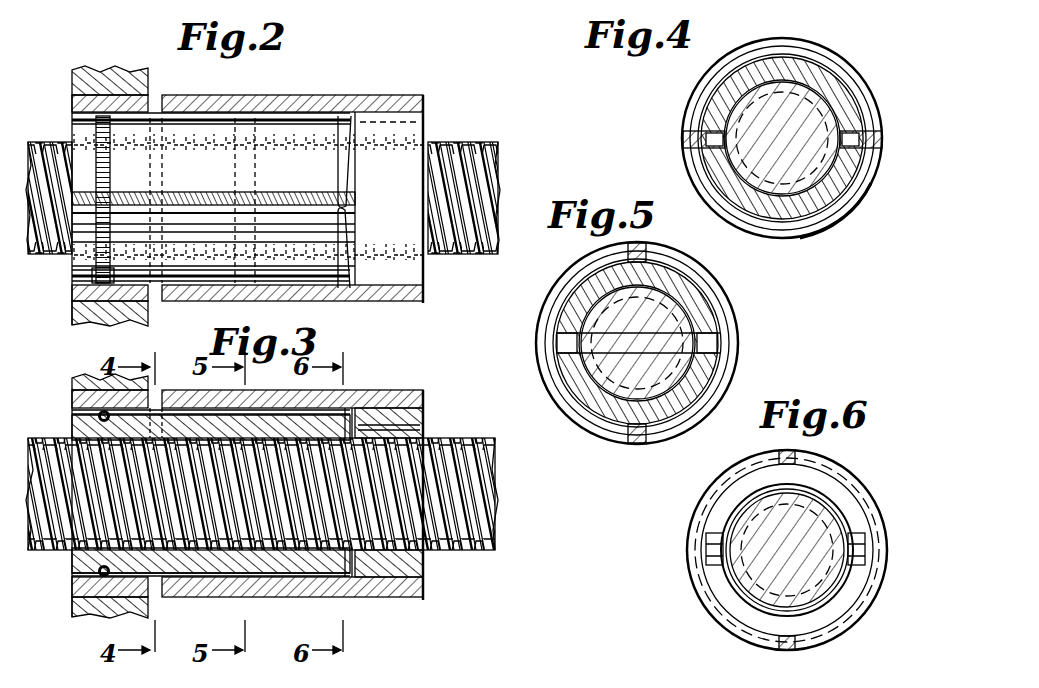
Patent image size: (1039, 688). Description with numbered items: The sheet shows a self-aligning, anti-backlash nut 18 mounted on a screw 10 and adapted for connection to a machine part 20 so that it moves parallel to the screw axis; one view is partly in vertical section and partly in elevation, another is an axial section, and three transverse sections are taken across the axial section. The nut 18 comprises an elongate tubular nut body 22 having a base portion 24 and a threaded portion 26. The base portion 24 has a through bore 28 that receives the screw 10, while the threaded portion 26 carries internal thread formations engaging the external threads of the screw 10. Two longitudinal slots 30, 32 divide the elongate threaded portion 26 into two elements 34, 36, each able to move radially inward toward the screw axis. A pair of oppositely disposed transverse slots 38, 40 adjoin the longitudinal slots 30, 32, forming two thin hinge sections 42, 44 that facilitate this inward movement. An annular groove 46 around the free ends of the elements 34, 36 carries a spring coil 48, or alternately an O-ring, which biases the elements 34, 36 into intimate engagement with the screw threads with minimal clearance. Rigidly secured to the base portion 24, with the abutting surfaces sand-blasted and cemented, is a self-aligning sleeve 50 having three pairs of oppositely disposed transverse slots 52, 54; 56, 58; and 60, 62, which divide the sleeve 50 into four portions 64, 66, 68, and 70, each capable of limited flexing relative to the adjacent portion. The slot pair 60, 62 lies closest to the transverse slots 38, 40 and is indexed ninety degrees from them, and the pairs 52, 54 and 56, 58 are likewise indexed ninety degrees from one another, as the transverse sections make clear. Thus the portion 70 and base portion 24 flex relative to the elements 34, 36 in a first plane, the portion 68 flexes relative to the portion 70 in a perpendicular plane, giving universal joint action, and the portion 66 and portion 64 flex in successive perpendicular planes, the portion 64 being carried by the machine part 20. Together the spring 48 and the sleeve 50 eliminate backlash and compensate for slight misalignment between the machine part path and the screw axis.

In FIG. 2, the screw 10 is at (470, 142).
In FIG. 3, the screw 10 is at (468, 444).
In FIG. 4, the screw 10 is at (800, 112).
In FIG. 5, the screw 10 is at (688, 372).
In FIG. 6, the screw 10 is at (812, 590).
In FIG. 2, the self-aligning, anti-backlash nut 18 is at (434, 323).
In FIG. 3, the self-aligning, anti-backlash nut 18 is at (440, 570).
In FIG. 2, the machine part 20 is at (93, 72).
In FIG. 3, the machine part 20 is at (82, 380).
In FIG. 2, the nut body 22 is at (207, 285).
In FIG. 3, the nut body 22 is at (302, 410).
In FIG. 2, the base portion 24 is at (395, 113).
In FIG. 3, the base portion 24 is at (420, 410).
In FIG. 2, the threaded portion 26 is at (66, 124).
In FIG. 3, the threaded portion 26 is at (66, 424).
In FIG. 2, the through bore 28 is at (405, 130).
In FIG. 3, the through bore 28 is at (422, 428).
In FIG. 3, the longitudinal slot 30 is at (72, 560).
In FIG. 4, the longitudinal slot 30 is at (712, 140).
In FIG. 5, the longitudinal slot 30 is at (562, 360).
In FIG. 6, the longitudinal slot 30 is at (706, 552).
In FIG. 2, the longitudinal slot 32 is at (215, 192).
In FIG. 4, the longitudinal slot 32 is at (850, 140).
In FIG. 5, the longitudinal slot 32 is at (708, 345).
In FIG. 6, the longitudinal slot 32 is at (862, 556).
In FIG. 2, the element 34 is at (215, 125).
In FIG. 3, the element 34 is at (205, 413).
In FIG. 4, the element 34 is at (795, 70).
In FIG. 5, the element 34 is at (660, 285).
In FIG. 2, the element 36 is at (185, 288).
In FIG. 3, the element 36 is at (198, 597).
In FIG. 4, the element 36 is at (787, 215).
In FIG. 5, the element 36 is at (618, 425).
In FIG. 2, the transverse slot 38 is at (343, 115).
In FIG. 3, the transverse slot 38 is at (350, 410).
In FIG. 6, the transverse slot 38 is at (802, 482).
In FIG. 2, the transverse slot 40 is at (339, 300).
In FIG. 3, the transverse slot 40 is at (385, 597).
In FIG. 6, the transverse slot 40 is at (796, 638).
In FIG. 2, the hinge section 42 is at (352, 198).
In FIG. 6, the hinge section 42 is at (702, 536).
In FIG. 2, the hinge section 44 is at (355, 213).
In FIG. 6, the hinge section 44 is at (706, 566).
In FIG. 2, the annular groove 46 is at (112, 175).
In FIG. 3, the annular groove 46 is at (86, 605).
In FIG. 2, the spring coil 48 is at (92, 272).
In FIG. 3, the spring coil 48 is at (100, 608).
In FIG. 2, the self-aligning sleeve 50 is at (302, 94).
In FIG. 3, the self-aligning sleeve 50 is at (284, 392).
In FIG. 4, the self-aligning sleeve 50 is at (684, 104).
In FIG. 5, the self-aligning sleeve 50 is at (538, 314).
In FIG. 6, the self-aligning sleeve 50 is at (712, 626).
In FIG. 2, the transverse slot 52 is at (158, 108).
In FIG. 3, the transverse slot 52 is at (156, 410).
In FIG. 4, the transverse slot 52 is at (762, 52).
In FIG. 2, the transverse slot 54 is at (155, 301).
In FIG. 3, the transverse slot 54 is at (156, 600).
In FIG. 4, the transverse slot 54 is at (825, 228).
In FIG. 2, the transverse slot 56 is at (248, 188).
In FIG. 3, the transverse slot 56 is at (272, 597).
In FIG. 5, the transverse slot 56 is at (574, 268).
In FIG. 5, the transverse slot 58 is at (714, 302).
In FIG. 2, the transverse slot 60 is at (335, 185).
In FIG. 3, the transverse slot 60 is at (345, 597).
In FIG. 6, the transverse slot 60 is at (702, 500).
In FIG. 6, the transverse slot 62 is at (862, 506).
In FIG. 2, the sleeve portion 64 is at (76, 104).
In FIG. 3, the sleeve portion 64 is at (76, 400).
In FIG. 2, the sleeve portion 66 is at (178, 100).
In FIG. 3, the sleeve portion 66 is at (210, 600).
In FIG. 2, the sleeve portion 68 is at (285, 108).
In FIG. 3, the sleeve portion 68 is at (292, 597).
In FIG. 2, the sleeve portion 70 is at (384, 96).
In FIG. 3, the sleeve portion 70 is at (412, 598).